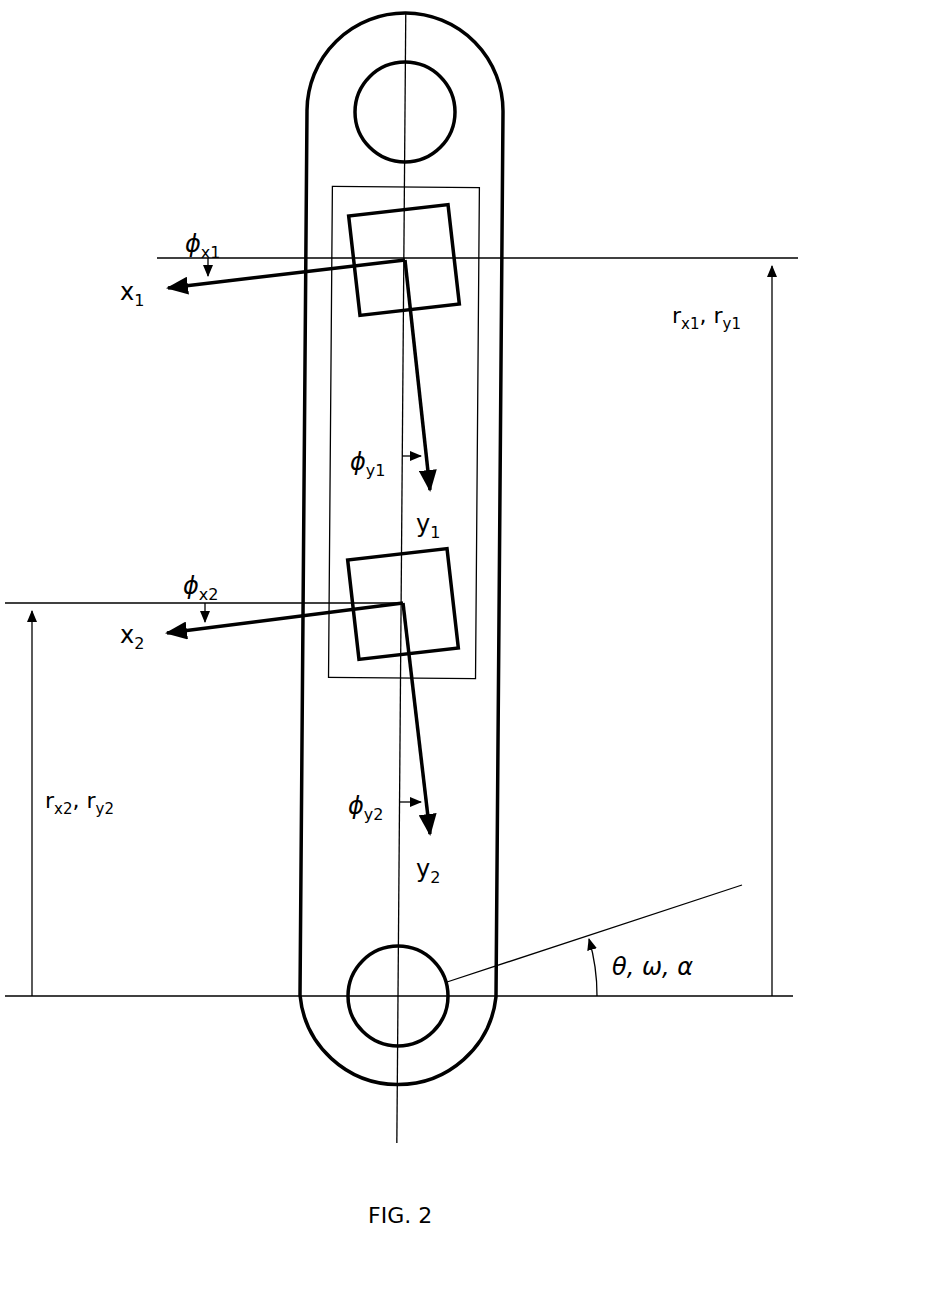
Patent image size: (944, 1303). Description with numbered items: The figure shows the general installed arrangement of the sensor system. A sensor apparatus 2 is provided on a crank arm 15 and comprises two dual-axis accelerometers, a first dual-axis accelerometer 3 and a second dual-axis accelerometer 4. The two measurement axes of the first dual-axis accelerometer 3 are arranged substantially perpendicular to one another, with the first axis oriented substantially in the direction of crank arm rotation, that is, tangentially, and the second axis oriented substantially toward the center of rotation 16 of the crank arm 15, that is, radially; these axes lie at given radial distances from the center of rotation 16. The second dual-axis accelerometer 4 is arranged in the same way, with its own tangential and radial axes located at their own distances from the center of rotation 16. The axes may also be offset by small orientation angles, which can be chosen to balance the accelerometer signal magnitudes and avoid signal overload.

The crank arm 15 is at (338, 110).
The center of rotation 16 is at (400, 997).
The sensor apparatus 2 is at (350, 205).
The first dual-axis accelerometer 3 is at (435, 234).
The second dual-axis accelerometer 4 is at (435, 582).